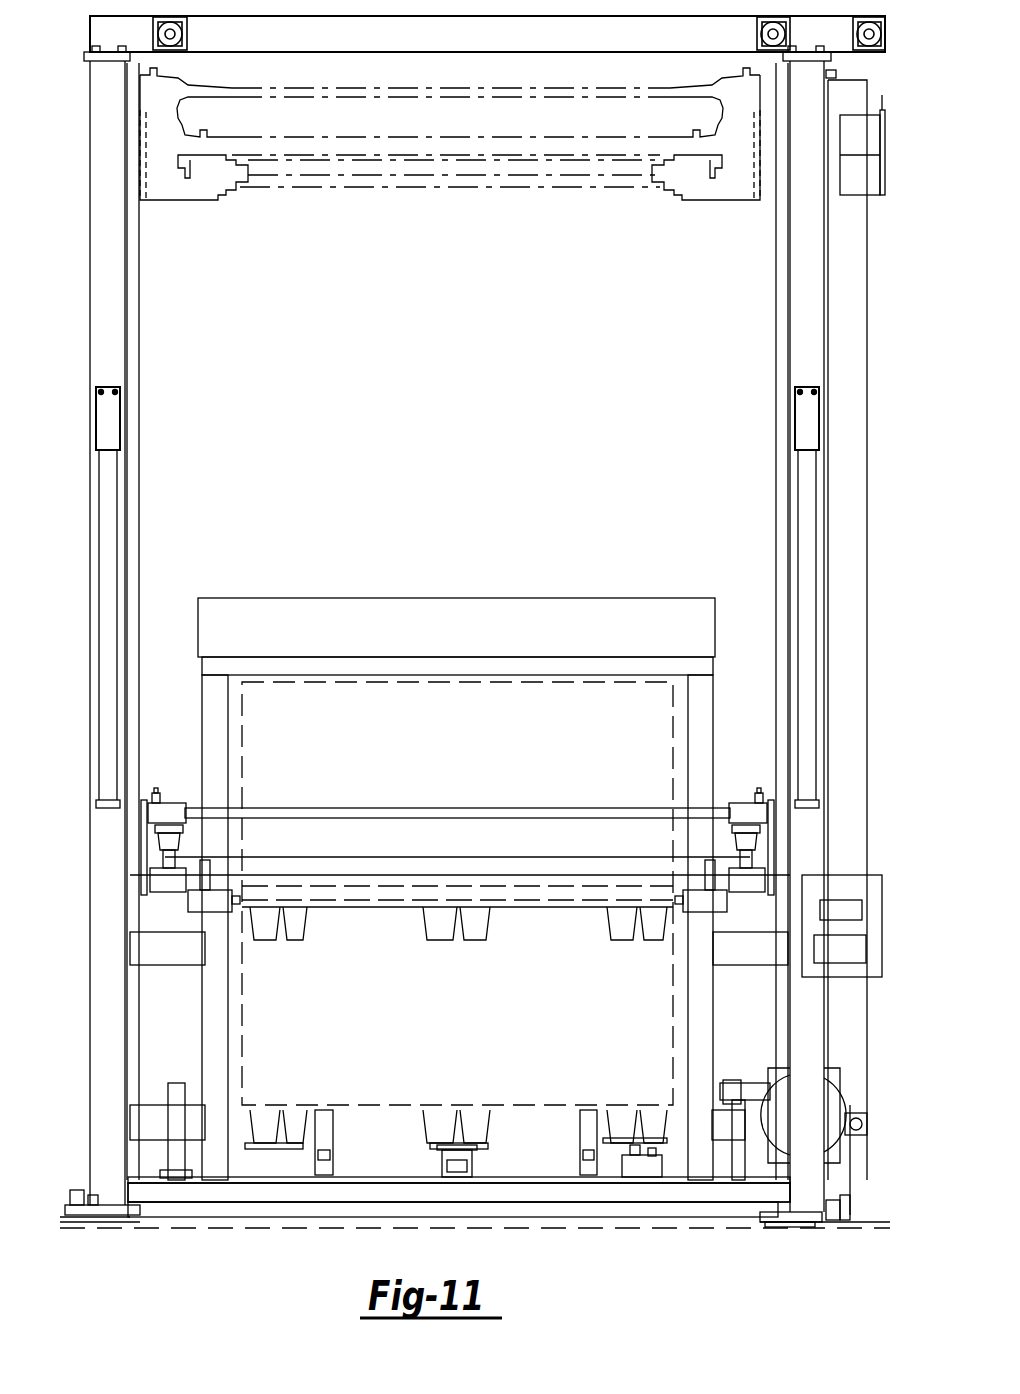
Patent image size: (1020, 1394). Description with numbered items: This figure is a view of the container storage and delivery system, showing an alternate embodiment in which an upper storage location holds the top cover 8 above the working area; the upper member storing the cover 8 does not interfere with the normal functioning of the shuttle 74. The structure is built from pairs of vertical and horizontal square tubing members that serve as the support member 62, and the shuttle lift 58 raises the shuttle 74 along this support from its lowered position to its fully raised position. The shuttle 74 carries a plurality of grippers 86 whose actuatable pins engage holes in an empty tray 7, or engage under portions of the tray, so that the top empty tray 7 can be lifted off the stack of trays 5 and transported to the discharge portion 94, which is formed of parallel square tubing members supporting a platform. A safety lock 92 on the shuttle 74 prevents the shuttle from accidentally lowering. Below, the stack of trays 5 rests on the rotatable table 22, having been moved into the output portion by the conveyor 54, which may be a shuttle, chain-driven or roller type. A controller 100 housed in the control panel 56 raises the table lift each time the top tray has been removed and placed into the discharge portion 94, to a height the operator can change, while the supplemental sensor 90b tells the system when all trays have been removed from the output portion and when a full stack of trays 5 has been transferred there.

The stack of trays 5 is at (255, 1065).
The empty tray 7 is at (648, 935).
The top cover 8 is at (624, 196).
The rotatable table 22 is at (475, 1163).
The conveyor 54 is at (668, 1180).
The control panel 56 is at (870, 919).
The shuttle lift 58 is at (858, 481).
The support member 62 is at (800, 323).
The shuttle 74 is at (172, 808).
The grippers 86 is at (220, 905).
The supplemental sensor 90b is at (728, 1085).
The safety lock 92 is at (855, 903).
The discharge portion 94 is at (612, 608).
The controller 100 is at (865, 950).